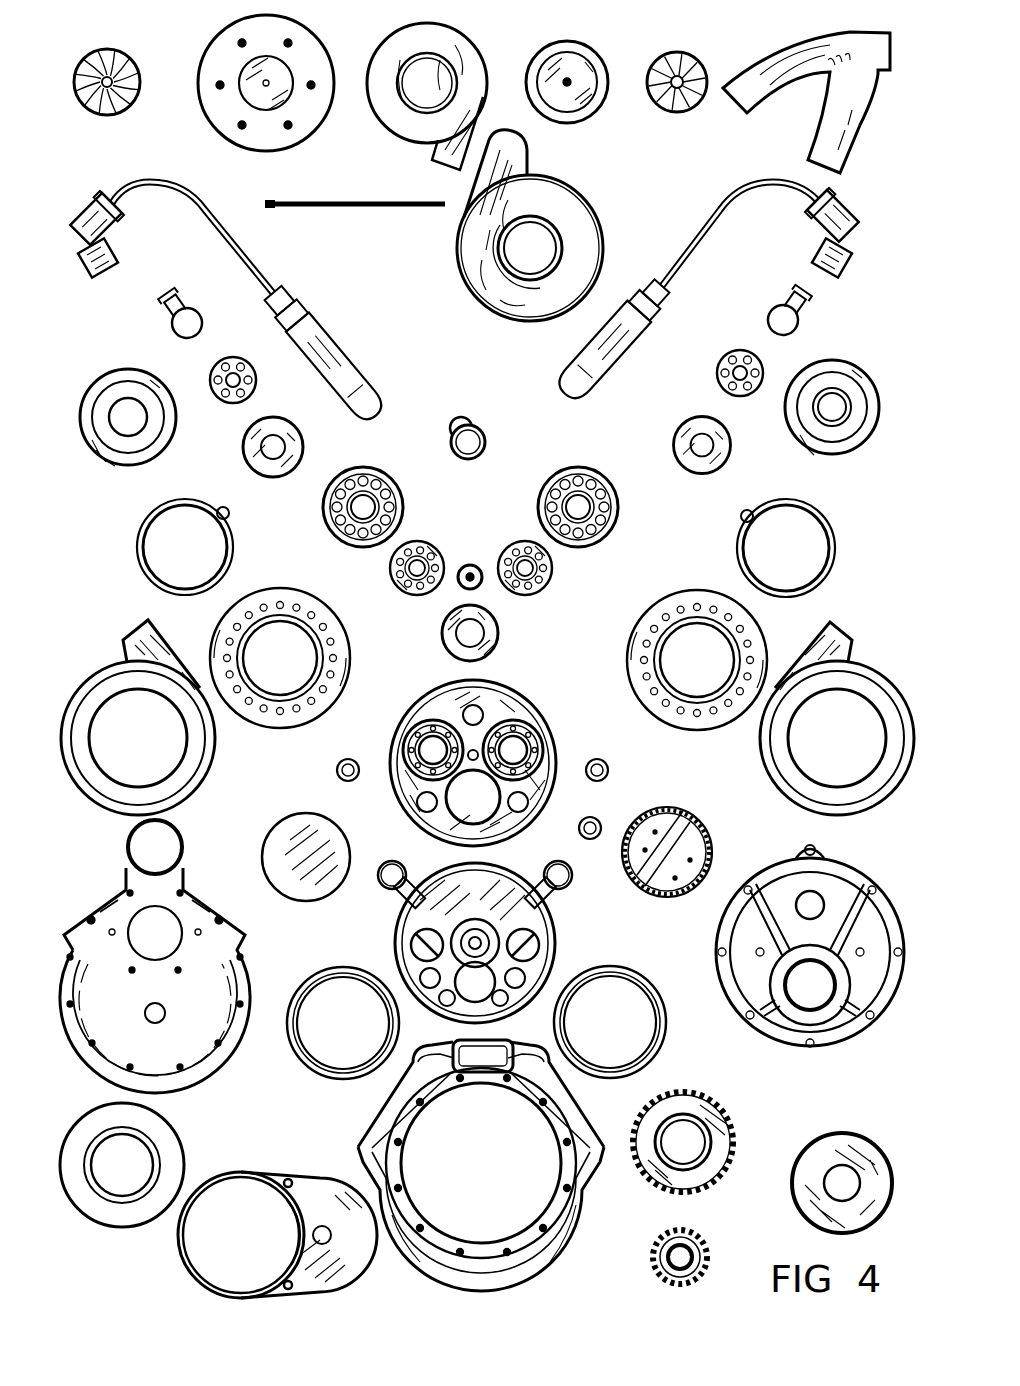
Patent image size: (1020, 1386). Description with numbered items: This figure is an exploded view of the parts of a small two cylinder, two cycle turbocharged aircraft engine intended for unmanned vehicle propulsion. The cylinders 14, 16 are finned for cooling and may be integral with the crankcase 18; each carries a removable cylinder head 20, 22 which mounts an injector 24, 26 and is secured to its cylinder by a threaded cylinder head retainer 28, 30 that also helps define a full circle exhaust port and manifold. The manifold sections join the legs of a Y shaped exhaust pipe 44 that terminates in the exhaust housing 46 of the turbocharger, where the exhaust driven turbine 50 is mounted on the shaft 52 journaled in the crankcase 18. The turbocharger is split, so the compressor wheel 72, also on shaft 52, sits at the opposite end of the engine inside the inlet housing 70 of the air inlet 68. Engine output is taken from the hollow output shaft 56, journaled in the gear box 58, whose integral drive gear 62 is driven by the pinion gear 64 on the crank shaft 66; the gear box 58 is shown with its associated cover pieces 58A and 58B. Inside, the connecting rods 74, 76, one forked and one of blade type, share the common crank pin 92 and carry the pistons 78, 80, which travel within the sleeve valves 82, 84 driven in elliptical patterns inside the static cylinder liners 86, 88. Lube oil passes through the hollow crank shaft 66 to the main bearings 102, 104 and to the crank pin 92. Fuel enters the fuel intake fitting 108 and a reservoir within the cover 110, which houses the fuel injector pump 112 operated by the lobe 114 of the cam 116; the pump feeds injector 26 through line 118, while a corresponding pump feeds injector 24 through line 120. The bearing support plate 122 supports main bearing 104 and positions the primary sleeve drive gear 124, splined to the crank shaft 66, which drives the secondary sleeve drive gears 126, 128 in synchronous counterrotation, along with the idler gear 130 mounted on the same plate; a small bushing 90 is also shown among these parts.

The cylinder 14 is at (770, 776).
The cylinder 16 is at (206, 776).
The crankcase 18 is at (556, 1245).
The cylinder head 20 is at (870, 380).
The cylinder head 22 is at (108, 372).
The injector 24 is at (858, 245).
The injector 26 is at (77, 252).
The cylinder head retainer 28 is at (653, 605).
The cylinder head retainer 30 is at (328, 607).
The Y shaped exhaust pipe 44 is at (850, 32).
The exhaust housing 46 is at (462, 35).
The exhaust driven turbine 50 is at (700, 55).
The shaft 52 is at (330, 208).
The hollow output shaft 56 is at (664, 1118).
The gear box 58 is at (186, 1262).
The cover disc 58A is at (817, 1136).
The cover ring 58B is at (172, 1128).
The drive gear 62 is at (690, 1125).
The pinion gear 64 is at (699, 1232).
The crank shaft 66 is at (478, 935).
The air inlet 68 is at (555, 255).
The inlet housing 70 is at (548, 225).
The compressor wheel 72 is at (132, 52).
The connecting rod 74 is at (568, 888).
The connecting rod 76 is at (385, 888).
The piston 78 is at (713, 838).
The piston 80 is at (268, 840).
The sleeve valve 82 is at (828, 540).
The sleeve valve 84 is at (195, 503).
The cylinder liner 86 is at (658, 995).
The cylinder liner 88 is at (297, 995).
The bushing 90 is at (342, 768).
The crank pin 92 is at (477, 937).
The main bearing 102 is at (772, 978).
The main bearing 104 is at (478, 645).
The fuel intake fitting 108 is at (181, 956).
The cover 110 is at (212, 1058).
The fuel injector pump 112 is at (585, 360).
The lobe 114 is at (458, 426).
The cam 116 is at (487, 442).
The line 118 is at (716, 238).
The line 120 is at (195, 190).
The bearing support plate 122 is at (401, 722).
The primary sleeve drive gear 124 is at (493, 652).
The secondary sleeve drive gear 126 is at (608, 530).
The secondary sleeve drive gear 128 is at (347, 537).
The idler gear 130 is at (483, 588).